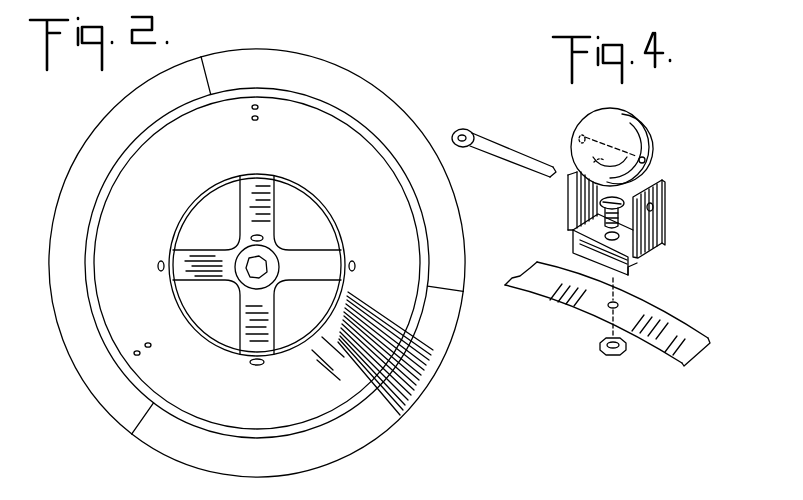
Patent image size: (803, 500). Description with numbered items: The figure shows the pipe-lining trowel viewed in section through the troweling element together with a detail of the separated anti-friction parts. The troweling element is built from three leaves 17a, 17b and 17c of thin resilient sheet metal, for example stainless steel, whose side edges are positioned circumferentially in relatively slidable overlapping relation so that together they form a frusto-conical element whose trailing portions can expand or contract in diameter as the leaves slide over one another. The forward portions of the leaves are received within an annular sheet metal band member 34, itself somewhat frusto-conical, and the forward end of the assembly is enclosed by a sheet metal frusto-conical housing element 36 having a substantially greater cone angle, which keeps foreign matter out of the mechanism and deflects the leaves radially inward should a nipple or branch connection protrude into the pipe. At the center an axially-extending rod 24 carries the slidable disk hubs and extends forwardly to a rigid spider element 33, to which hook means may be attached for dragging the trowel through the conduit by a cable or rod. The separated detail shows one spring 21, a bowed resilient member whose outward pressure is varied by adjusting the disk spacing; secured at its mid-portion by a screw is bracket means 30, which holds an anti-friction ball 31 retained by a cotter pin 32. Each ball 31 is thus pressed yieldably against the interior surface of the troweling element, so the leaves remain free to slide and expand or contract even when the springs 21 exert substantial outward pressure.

In FIG. 2, the leaf 17a is at (445, 222).
In FIG. 2, the leaf 17b is at (408, 400).
In FIG. 2, the leaf 17c is at (68, 206).
In FIG. 2, the annular sheet metal band member 34 is at (375, 138).
In FIG. 2, the frusto-conical housing element 36 is at (344, 130).
In FIG. 2, the rigid spider element 33 is at (293, 270).
In FIG. 2, the axially-extending rod 24 is at (265, 260).
In FIG. 4, the cotter pin 32 is at (505, 153).
In FIG. 4, the ball 31 is at (590, 127).
In FIG. 4, the bracket means 30 is at (641, 258).
In FIG. 4, the spring 21 is at (683, 330).